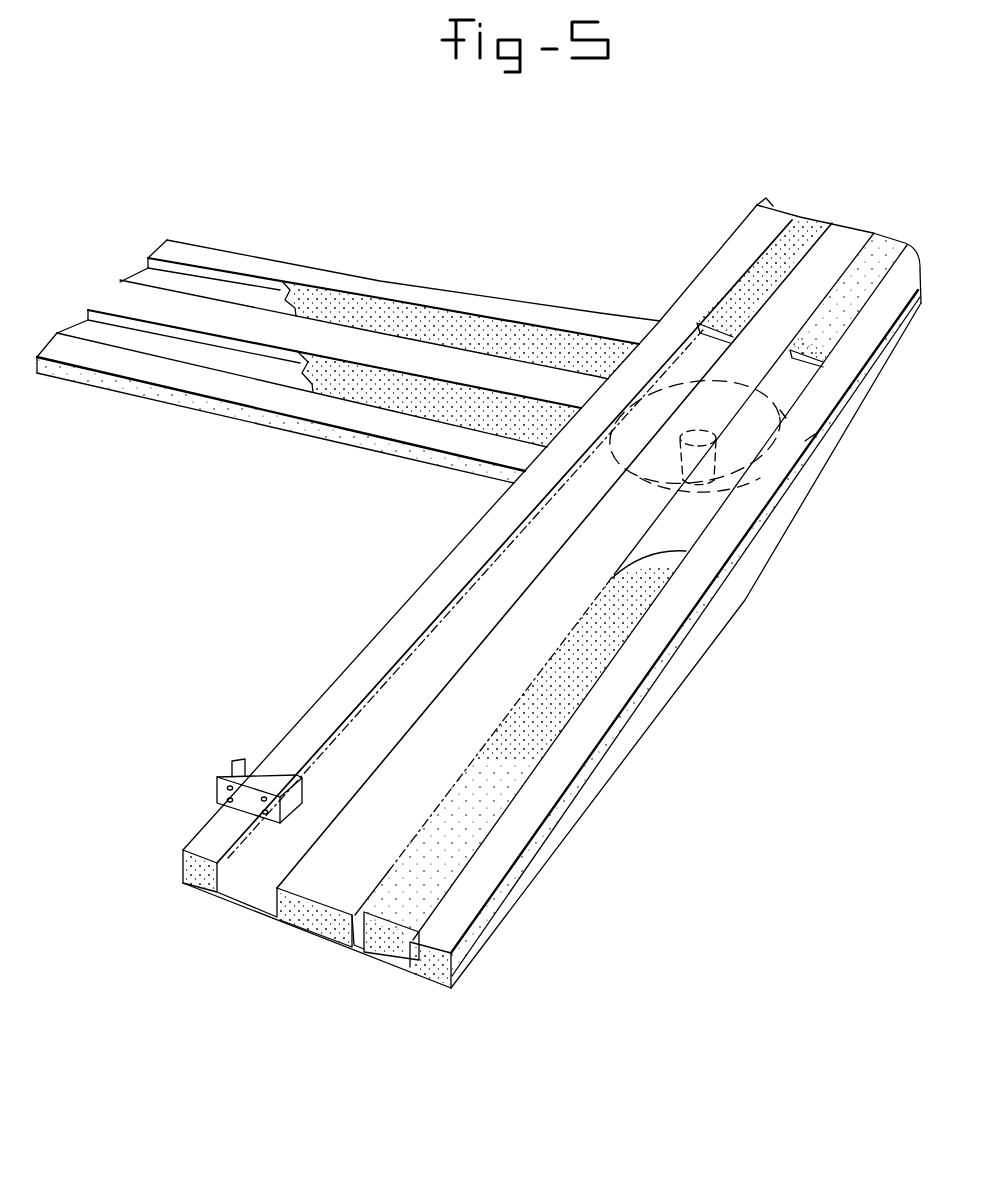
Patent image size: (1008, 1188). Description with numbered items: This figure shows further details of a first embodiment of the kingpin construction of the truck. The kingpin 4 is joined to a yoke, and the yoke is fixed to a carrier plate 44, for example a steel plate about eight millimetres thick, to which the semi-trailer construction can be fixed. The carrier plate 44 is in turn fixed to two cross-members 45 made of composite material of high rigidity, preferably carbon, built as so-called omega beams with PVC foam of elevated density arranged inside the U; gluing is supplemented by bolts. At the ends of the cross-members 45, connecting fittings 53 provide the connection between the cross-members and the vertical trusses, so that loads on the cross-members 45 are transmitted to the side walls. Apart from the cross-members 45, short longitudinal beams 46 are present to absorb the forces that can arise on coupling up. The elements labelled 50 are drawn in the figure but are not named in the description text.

The kingpin 4 is at (760, 525).
The carrier plate 44 is at (830, 441).
The cross-members 45 is at (557, 773).
The short longitudinal beams 46 is at (316, 278).
The ribs 50 is at (738, 300).
The connecting fittings 53 is at (238, 776).